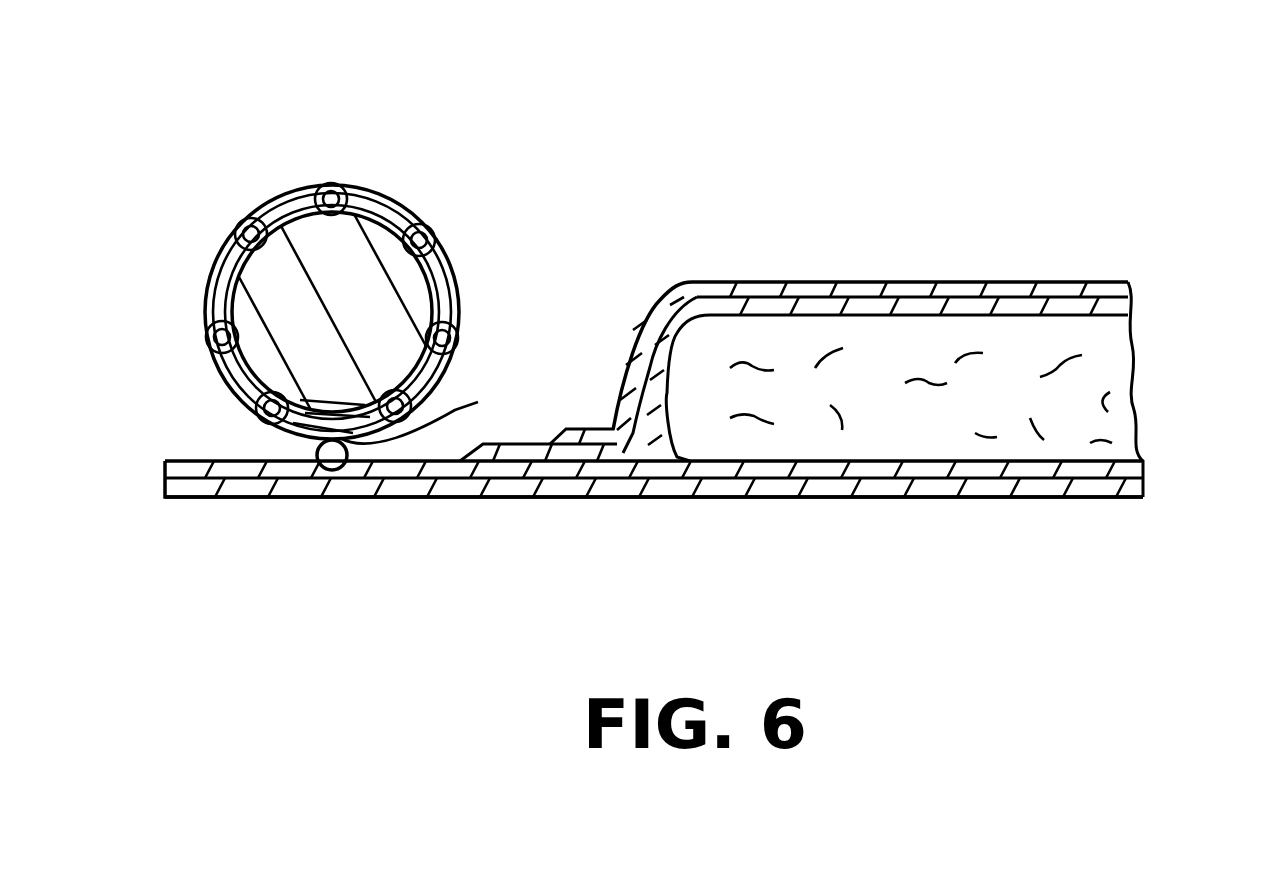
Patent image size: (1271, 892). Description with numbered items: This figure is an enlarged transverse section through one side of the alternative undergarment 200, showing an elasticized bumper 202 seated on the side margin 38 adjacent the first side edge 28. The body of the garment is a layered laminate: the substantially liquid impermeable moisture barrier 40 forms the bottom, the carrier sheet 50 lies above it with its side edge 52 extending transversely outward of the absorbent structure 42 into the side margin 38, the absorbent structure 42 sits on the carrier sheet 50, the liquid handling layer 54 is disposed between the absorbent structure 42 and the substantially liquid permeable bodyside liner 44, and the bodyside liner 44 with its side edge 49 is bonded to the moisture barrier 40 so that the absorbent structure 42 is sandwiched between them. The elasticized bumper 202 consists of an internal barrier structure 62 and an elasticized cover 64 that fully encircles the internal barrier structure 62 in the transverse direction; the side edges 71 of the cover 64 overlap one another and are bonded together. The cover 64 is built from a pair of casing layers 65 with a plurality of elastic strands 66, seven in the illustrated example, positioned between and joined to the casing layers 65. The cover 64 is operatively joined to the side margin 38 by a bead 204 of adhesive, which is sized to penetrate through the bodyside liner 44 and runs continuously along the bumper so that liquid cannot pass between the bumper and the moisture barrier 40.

The first side edge 28 is at (163, 483).
The side margin 38 is at (245, 498).
The moisture barrier 40 is at (1023, 497).
The absorbent structure 42 is at (1113, 415).
The bodyside liner 44 is at (955, 282).
The side edge of bodyside liner 49 is at (560, 462).
The carrier sheet 50 is at (805, 462).
The side edge of carrier sheet 52 is at (468, 462).
The liquid handling layer 54 is at (1057, 282).
The internal barrier structure 62 is at (262, 358).
The elasticized cover 64 is at (210, 278).
The casing layer 65 is at (306, 184).
The elastic strand 66 is at (456, 298).
The side edge of cover 71 is at (438, 410).
The undergarment 200 is at (710, 283).
The elasticized bumper 202 is at (253, 210).
The adhesive bead 204 is at (372, 462).